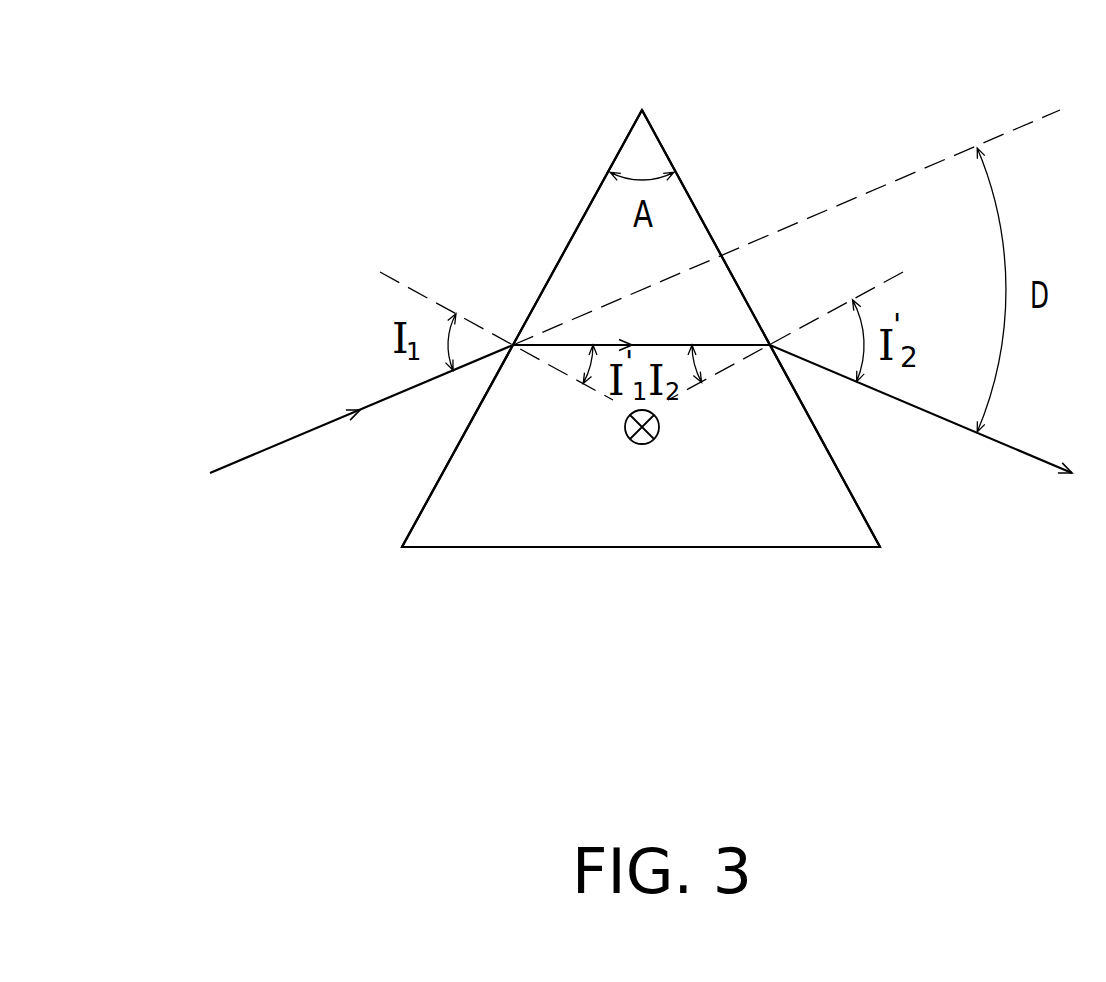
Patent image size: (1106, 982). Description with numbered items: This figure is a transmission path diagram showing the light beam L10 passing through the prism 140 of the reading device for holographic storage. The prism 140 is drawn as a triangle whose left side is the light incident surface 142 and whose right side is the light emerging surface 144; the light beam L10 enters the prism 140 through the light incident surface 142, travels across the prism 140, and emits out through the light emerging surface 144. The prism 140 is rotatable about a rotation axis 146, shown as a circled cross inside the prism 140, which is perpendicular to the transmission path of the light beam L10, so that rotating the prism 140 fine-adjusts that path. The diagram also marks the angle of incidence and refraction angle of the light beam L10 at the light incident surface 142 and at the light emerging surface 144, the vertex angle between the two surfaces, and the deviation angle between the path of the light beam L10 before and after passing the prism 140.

The prism 140 is at (522, 527).
The light incident surface 142 is at (580, 218).
The light emerging surface 144 is at (688, 188).
The rotation axis 146 is at (645, 445).
The light beam L10 is at (385, 397).